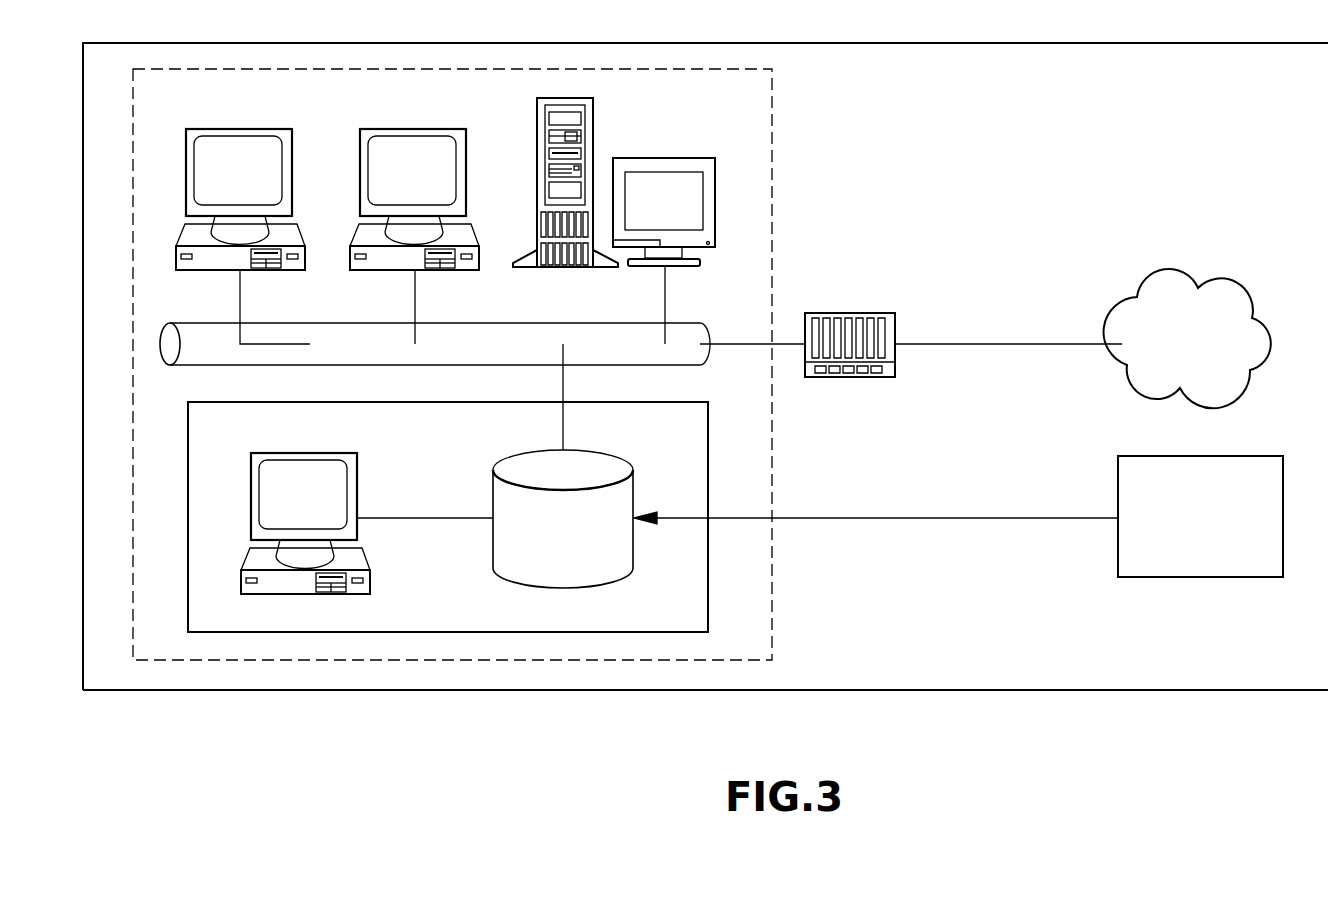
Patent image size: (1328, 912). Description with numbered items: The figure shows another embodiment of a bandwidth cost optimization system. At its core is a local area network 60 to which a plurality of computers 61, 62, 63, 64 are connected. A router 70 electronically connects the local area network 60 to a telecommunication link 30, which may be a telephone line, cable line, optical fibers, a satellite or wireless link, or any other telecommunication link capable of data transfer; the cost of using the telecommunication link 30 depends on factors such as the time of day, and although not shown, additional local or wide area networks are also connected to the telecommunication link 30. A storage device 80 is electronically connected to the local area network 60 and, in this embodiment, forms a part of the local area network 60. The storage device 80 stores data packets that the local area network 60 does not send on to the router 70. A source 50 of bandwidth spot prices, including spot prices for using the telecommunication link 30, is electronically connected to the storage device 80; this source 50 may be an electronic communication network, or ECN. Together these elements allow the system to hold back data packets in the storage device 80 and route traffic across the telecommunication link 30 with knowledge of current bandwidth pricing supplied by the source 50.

The telecommunication link 30 is at (977, 343).
The source of bandwidth spot prices 50 is at (1200, 580).
The local area network 60 is at (773, 161).
The computer 61 is at (236, 129).
The computer 62 is at (410, 129).
The computer 63 is at (663, 158).
The computer 64 is at (301, 452).
The router 70 is at (849, 311).
The storage device 80 is at (601, 450).